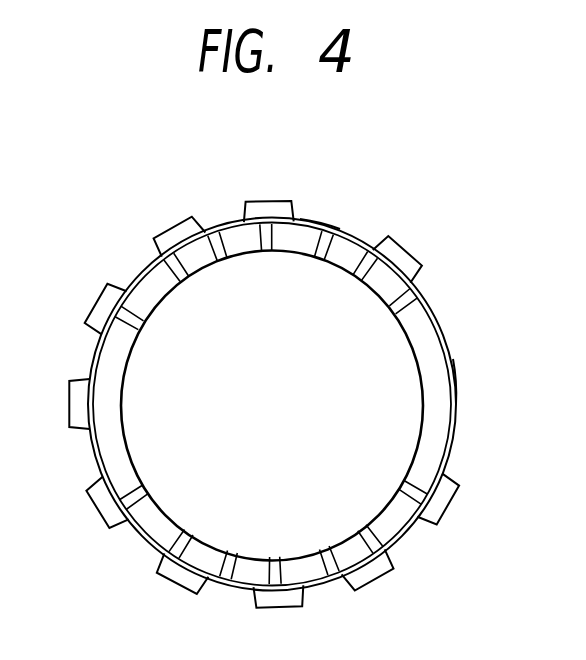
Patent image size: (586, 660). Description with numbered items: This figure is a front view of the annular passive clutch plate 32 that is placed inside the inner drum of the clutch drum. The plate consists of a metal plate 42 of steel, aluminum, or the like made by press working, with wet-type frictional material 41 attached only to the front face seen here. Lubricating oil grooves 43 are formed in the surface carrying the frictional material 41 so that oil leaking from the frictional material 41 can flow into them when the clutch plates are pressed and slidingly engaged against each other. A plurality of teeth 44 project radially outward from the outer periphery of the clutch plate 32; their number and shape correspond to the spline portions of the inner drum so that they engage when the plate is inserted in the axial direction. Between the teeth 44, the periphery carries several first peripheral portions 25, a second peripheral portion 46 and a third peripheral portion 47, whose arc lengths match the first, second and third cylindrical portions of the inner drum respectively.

The passive clutch plate 32 is at (356, 200).
The first peripheral portions 25 is at (222, 213).
The wet-type frictional material 41 is at (425, 330).
The metal plate 42 is at (319, 207).
The lubricating oil grooves 43 is at (372, 278).
The teeth 44 is at (171, 234).
The second peripheral portion 46 is at (357, 234).
The third peripheral portion 47 is at (453, 359).